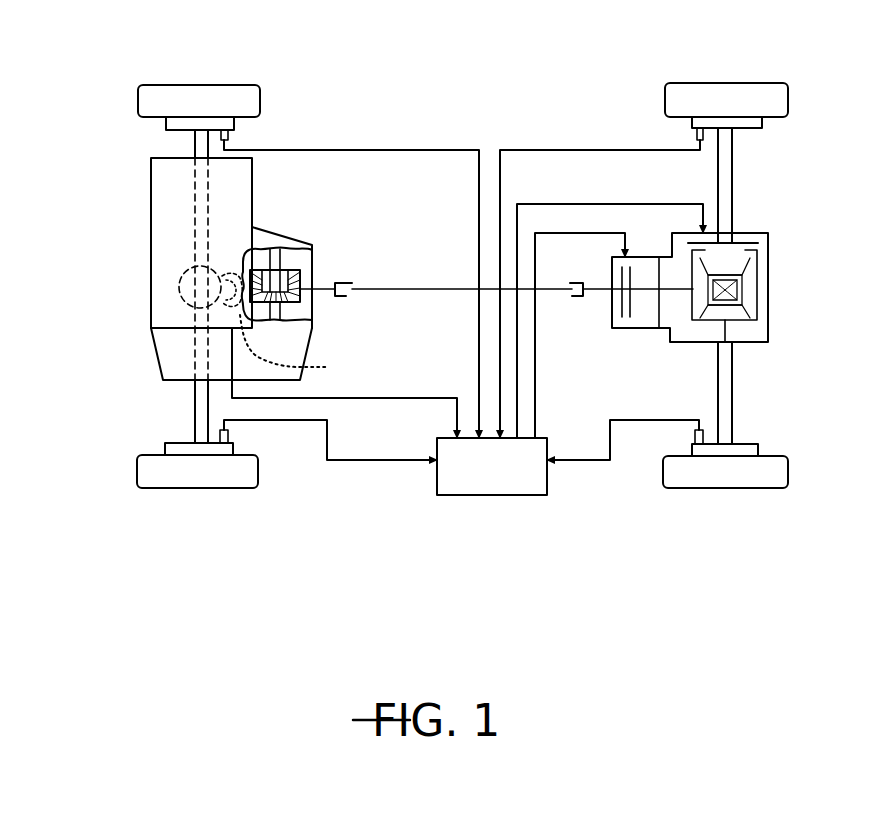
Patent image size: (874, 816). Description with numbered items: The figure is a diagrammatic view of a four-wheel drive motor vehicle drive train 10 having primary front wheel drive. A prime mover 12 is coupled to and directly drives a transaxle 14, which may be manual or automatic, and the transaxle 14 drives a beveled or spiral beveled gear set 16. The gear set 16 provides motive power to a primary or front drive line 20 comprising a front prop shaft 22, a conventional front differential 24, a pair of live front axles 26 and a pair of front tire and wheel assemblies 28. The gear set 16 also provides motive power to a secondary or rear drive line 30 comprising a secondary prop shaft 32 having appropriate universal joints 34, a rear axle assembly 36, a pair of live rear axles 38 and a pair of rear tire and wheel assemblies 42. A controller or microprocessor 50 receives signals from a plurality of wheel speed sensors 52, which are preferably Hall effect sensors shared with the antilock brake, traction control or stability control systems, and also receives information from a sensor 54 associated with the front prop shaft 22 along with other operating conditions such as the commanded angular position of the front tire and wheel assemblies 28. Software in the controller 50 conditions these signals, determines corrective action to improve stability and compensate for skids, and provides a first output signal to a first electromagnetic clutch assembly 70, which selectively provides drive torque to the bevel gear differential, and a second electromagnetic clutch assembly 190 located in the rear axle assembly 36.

The motor vehicle drive train 10 is at (308, 563).
The prime mover 12 is at (151, 220).
The transaxle 14 is at (313, 258).
The bevel gear set 16 is at (272, 265).
The front drive line 20 is at (145, 508).
The front prop shaft 22 is at (249, 282).
The front differential 24 is at (172, 290).
The live front axles 26 is at (190, 398).
The front tire and wheel assemblies 28 is at (170, 80).
The rear drive line 30 is at (633, 537).
The secondary prop shaft 32 is at (448, 287).
The universal joints 34 is at (348, 296).
The rear axle assembly 36 is at (807, 287).
The live rear axles 38 is at (733, 155).
The rear tire and wheel assemblies 42 is at (735, 80).
The controller 50 is at (497, 485).
The wheel speed sensors 52 is at (232, 136).
The sensor 54 is at (299, 346).
The first electromagnetic clutch assembly 70 is at (642, 230).
The second electromagnetic clutch assembly 190 is at (745, 350).